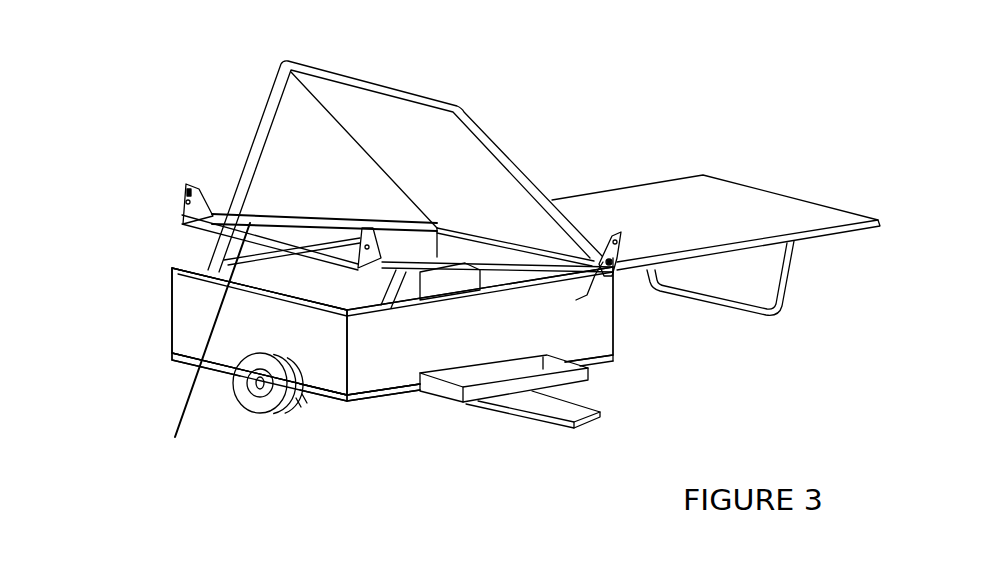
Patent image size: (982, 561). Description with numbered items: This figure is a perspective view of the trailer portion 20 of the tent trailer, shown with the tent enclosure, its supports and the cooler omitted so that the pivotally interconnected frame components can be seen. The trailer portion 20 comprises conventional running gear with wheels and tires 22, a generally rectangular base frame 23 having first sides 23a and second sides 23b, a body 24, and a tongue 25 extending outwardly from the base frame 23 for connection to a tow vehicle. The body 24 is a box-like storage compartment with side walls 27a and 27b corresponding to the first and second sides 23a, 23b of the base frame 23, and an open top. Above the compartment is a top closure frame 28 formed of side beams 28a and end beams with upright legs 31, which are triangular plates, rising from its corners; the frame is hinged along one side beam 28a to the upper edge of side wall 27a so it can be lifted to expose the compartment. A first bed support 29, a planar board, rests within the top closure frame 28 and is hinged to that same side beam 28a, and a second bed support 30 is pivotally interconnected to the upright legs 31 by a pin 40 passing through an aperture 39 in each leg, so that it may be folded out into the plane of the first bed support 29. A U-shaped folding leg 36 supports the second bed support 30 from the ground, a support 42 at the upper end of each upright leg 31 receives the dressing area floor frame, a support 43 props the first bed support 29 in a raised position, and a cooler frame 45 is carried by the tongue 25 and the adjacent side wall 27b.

The trailer portion 20 is at (637, 367).
The wheels and tires 22 is at (257, 403).
The base frame 23 is at (343, 413).
The first sides 23a is at (182, 358).
The second sides 23b is at (368, 396).
The body 24 is at (153, 298).
The tongue 25 is at (548, 408).
The side wall 27a is at (207, 323).
The side wall 27b is at (570, 327).
The top closure frame 28 is at (167, 222).
The side beams 28a is at (173, 437).
The first bed support 29 is at (360, 112).
The second bed support 30 is at (740, 210).
The upright legs 31 is at (187, 207).
The folding leg 36 is at (788, 285).
The aperture 39 is at (623, 257).
The pin 40 is at (593, 293).
The support 42 is at (188, 182).
The support 43 is at (270, 100).
The cooler frame 45 is at (433, 390).